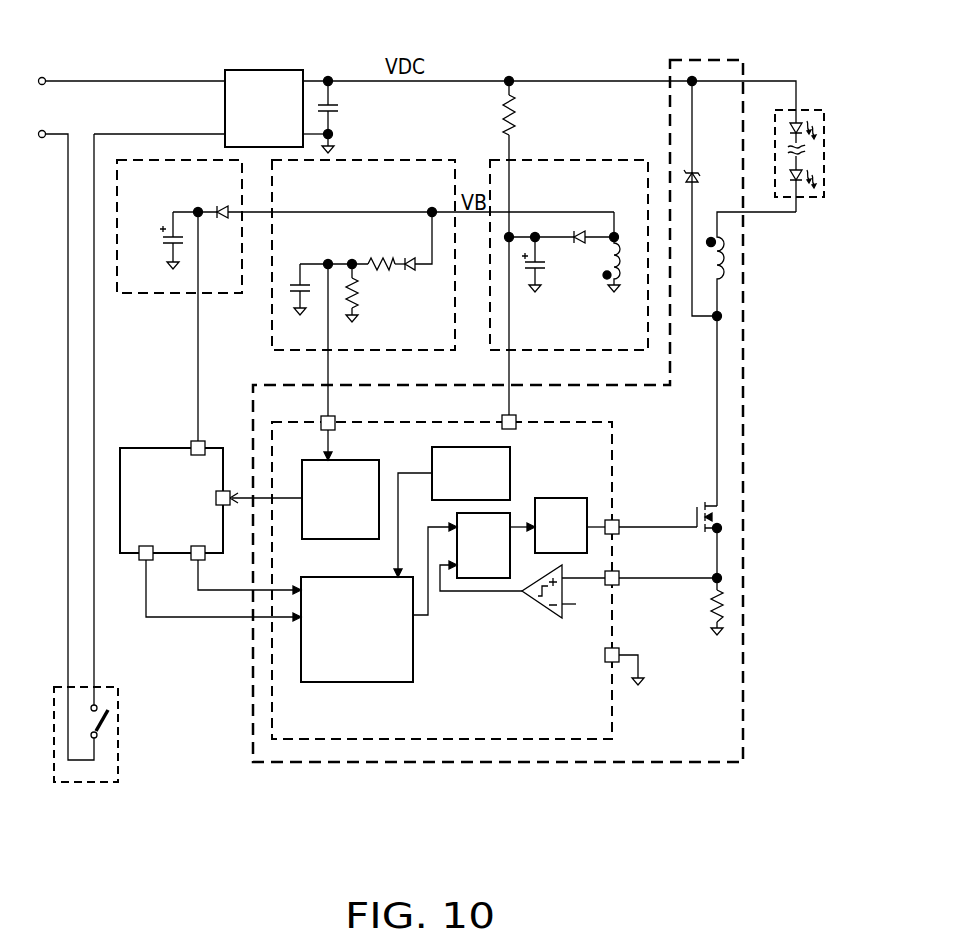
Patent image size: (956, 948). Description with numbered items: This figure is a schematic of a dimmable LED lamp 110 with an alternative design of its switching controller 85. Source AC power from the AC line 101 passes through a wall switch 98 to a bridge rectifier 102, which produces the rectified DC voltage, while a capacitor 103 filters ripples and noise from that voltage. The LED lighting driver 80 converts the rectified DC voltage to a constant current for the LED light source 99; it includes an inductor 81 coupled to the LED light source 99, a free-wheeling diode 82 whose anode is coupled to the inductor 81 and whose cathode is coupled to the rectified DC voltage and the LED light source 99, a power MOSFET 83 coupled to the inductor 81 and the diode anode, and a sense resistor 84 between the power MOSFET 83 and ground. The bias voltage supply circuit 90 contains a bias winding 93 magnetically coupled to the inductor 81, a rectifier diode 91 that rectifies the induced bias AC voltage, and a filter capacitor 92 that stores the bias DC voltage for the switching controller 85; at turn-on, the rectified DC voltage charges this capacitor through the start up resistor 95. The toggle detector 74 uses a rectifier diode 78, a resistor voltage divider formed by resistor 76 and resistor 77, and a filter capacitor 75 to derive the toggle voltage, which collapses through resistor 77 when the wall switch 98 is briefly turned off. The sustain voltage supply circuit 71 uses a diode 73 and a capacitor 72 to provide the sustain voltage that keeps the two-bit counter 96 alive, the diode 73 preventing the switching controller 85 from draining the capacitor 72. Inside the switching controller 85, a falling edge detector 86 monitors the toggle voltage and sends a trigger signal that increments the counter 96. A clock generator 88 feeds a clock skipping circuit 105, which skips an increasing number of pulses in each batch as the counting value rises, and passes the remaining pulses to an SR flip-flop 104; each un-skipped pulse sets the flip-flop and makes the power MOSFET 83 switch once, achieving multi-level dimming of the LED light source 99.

The AC line 101 is at (126, 407).
The bridge rectifier 102 is at (243, 70).
The capacitor 103 is at (338, 107).
The LED lamp 110 is at (543, 64).
The start up resistor 95 is at (515, 128).
The sustain voltage supply circuit 71 is at (151, 192).
The capacitor 72 is at (165, 242).
The diode 73 is at (219, 207).
The toggle detector 74 is at (308, 192).
The filter capacitor 75 is at (291, 285).
The resistor 76 is at (371, 262).
The resistor 77 is at (356, 298).
The rectifier diode 78 is at (405, 280).
The bias voltage supply circuit 90 is at (625, 192).
The rectifier diode 91 is at (575, 232).
The filter capacitor 92 is at (547, 265).
The bias winding 93 is at (605, 271).
The LED lighting driver 80 is at (731, 737).
The free-wheeling diode 82 is at (700, 181).
The inductor 81 is at (730, 266).
The power MOSFET 83 is at (713, 502).
The sense resistor 84 is at (710, 606).
The switching controller 85 is at (601, 464).
The falling edge detector 86 is at (358, 460).
The clock generator 88 is at (510, 478).
The clock skipping circuit 105 is at (355, 576).
The SR flip-flop 104 is at (483, 579).
The counter 96 is at (210, 519).
The wall switch 98 is at (118, 735).
The LED light source 99 is at (810, 108).